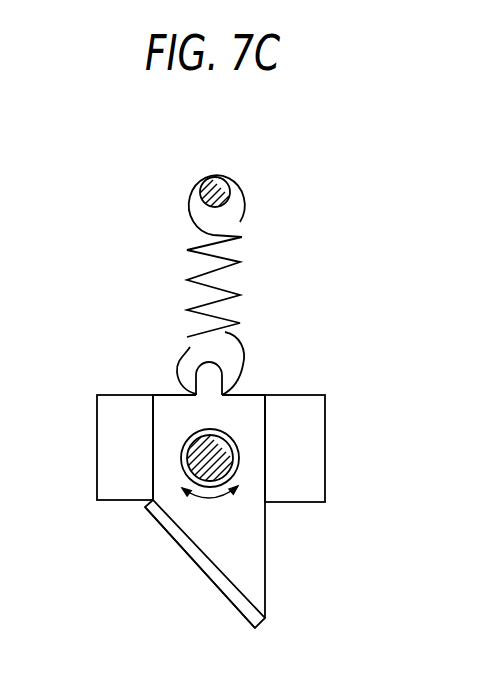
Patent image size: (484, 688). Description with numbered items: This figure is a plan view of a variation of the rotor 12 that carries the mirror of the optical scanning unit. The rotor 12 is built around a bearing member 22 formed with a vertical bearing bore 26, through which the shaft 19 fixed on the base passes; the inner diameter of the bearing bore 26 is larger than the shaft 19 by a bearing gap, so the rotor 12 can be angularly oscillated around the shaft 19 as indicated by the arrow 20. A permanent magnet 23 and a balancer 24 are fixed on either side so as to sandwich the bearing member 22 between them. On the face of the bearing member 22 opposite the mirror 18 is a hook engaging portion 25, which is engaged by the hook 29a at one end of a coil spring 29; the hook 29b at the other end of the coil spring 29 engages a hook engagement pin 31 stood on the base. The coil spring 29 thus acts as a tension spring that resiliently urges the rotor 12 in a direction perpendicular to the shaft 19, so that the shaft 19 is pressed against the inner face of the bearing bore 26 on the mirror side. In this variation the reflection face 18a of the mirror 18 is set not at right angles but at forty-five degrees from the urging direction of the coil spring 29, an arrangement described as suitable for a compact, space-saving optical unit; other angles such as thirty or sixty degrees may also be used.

The rotor 12 is at (366, 310).
The mirror 18 is at (170, 530).
The reflection face 18a is at (210, 580).
The shaft 19 is at (197, 462).
The arrow (angular oscillation direction) 20 is at (210, 500).
The bearing member 22 is at (248, 413).
The permanent magnet 23 is at (132, 412).
The balancer 24 is at (310, 417).
The hook engaging portion 25 is at (208, 383).
The bearing bore 26 is at (187, 434).
The coil spring 29 is at (240, 263).
The hook 29a is at (178, 366).
The hook 29b is at (243, 204).
The hook engagement pin 31 is at (222, 178).